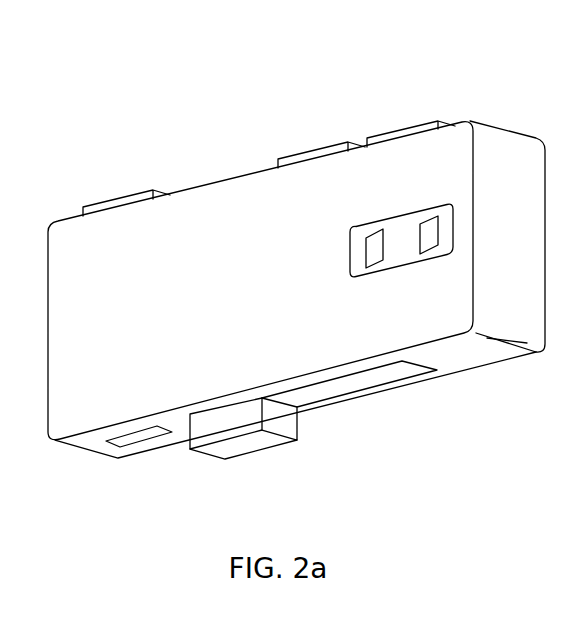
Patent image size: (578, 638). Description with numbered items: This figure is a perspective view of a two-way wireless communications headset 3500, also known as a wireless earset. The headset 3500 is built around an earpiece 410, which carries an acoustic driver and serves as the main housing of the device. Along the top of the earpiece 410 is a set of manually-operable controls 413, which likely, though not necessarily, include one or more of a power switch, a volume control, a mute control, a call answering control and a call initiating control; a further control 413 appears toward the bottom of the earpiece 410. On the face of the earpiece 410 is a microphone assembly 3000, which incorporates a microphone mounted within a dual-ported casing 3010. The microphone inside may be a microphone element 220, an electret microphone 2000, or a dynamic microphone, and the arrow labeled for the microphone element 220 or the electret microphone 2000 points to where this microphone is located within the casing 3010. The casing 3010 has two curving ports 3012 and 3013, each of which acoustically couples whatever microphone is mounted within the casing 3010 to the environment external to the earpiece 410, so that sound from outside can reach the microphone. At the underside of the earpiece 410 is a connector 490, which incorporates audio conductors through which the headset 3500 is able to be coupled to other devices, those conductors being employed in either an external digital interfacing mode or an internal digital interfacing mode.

The two-way wireless communications headset 3500 is at (163, 44).
The earpiece 410 is at (82, 327).
The set of manually-operable controls 413 is at (405, 130).
The connector 490 is at (137, 437).
The microphone assembly 3000 is at (330, 286).
The microphone element 220 is at (314, 247).
The electret microphone 2000 is at (320, 263).
The dual-ported casing 3010 is at (402, 246).
The curving port 3012 is at (427, 228).
The curving port 3013 is at (372, 246).